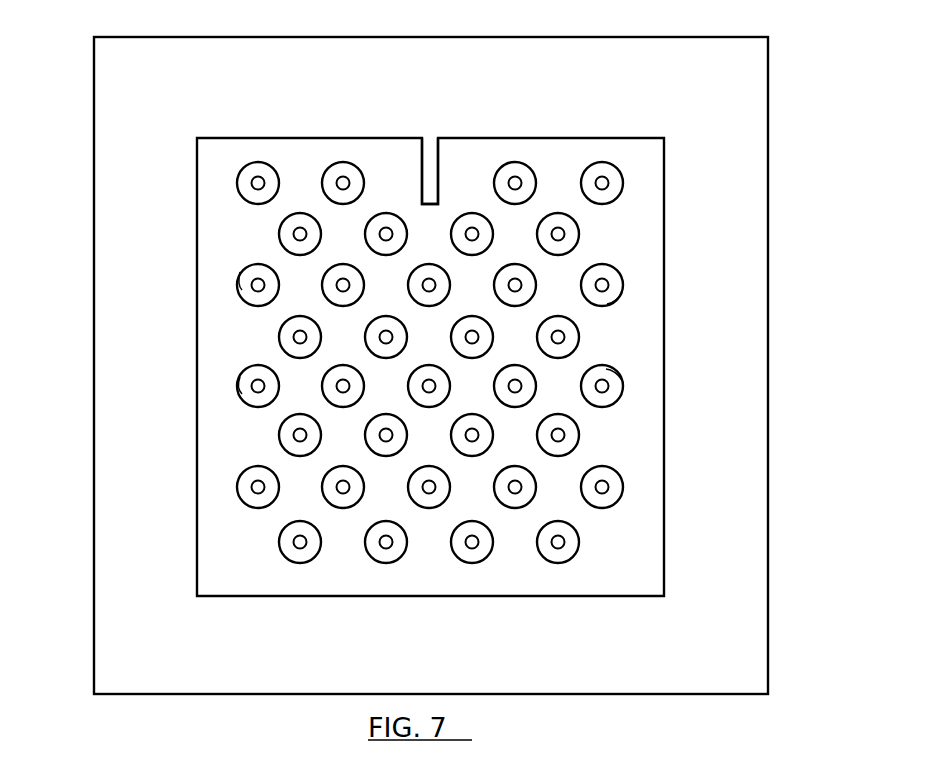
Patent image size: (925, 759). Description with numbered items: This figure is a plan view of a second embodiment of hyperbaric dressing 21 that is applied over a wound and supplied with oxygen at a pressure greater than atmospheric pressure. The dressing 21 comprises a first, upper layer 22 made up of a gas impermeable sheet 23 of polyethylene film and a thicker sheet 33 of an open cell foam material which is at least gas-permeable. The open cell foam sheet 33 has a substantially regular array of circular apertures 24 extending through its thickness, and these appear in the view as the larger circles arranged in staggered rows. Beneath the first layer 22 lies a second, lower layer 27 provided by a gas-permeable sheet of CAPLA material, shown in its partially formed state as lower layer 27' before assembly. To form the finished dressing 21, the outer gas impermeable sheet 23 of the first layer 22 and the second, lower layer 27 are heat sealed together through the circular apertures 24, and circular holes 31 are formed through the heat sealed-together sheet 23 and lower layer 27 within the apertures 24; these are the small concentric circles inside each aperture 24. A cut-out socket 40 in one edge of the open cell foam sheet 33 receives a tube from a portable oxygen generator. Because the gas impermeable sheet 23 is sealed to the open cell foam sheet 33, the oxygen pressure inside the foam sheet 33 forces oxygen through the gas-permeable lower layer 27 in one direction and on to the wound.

The hyperbaric dressing 21 is at (417, 375).
The first, upper layer 22 is at (416, 365).
The gas impermeable sheet 23 is at (397, 365).
The second, lower layer 27' is at (397, 365).
The second, lower layer 27 is at (397, 365).
The circular apertures 24 is at (623, 378).
The circular holes 31 is at (605, 285).
The open cell foam sheet 33 is at (430, 412).
The cut-out socket 40 is at (433, 161).